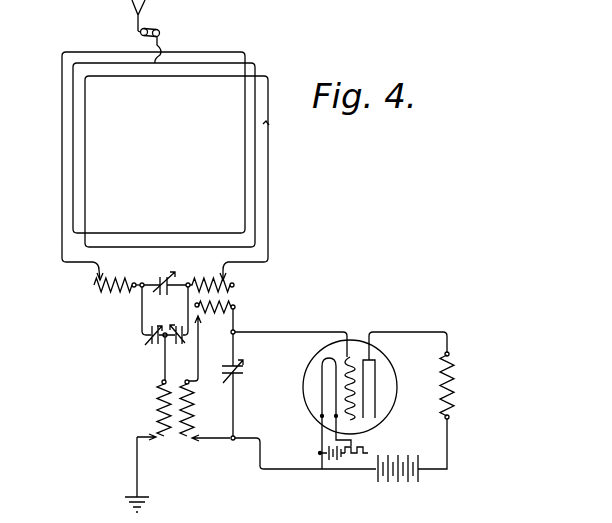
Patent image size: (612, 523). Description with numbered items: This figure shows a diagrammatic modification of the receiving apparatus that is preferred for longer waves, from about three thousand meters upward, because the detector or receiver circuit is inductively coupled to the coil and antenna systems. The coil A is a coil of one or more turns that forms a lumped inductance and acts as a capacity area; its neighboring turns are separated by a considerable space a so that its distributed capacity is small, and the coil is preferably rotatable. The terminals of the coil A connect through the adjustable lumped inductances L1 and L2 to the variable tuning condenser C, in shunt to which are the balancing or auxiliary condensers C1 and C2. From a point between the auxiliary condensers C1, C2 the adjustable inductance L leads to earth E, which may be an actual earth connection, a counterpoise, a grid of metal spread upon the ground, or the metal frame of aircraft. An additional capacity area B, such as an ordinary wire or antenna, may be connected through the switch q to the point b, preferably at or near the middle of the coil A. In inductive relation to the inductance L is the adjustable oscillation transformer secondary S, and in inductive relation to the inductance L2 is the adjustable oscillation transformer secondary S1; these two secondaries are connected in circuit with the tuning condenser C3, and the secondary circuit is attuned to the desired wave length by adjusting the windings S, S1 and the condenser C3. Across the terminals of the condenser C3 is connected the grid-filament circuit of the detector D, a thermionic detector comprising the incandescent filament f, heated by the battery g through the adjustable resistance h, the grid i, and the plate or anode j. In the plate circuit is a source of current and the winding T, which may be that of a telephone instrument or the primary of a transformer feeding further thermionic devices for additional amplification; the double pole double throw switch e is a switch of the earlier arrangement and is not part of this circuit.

The capacity area B is at (121, 8).
The switch q is at (151, 30).
The point b is at (162, 58).
The coil A is at (270, 183).
The space a is at (267, 122).
The adjustable lumped inductance L1 is at (110, 296).
The variable tuning condenser C is at (163, 273).
The adjustable lumped inductance L2 is at (234, 286).
The adjustable oscillation transformer secondary S1 is at (218, 321).
The auxiliary condenser C1 is at (152, 352).
The auxiliary condenser C2 is at (176, 350).
The tuning condenser C3 is at (238, 385).
The adjustable inductance L is at (152, 412).
The adjustable oscillation transformer secondary S is at (192, 411).
The earth E is at (146, 506).
The incandescent filament f is at (313, 406).
The grid i is at (356, 354).
The detector D is at (390, 369).
The plate j is at (373, 405).
The winding T is at (455, 382).
The battery g is at (325, 472).
The adjustable resistance h is at (363, 445).
The plate battery e is at (417, 490).